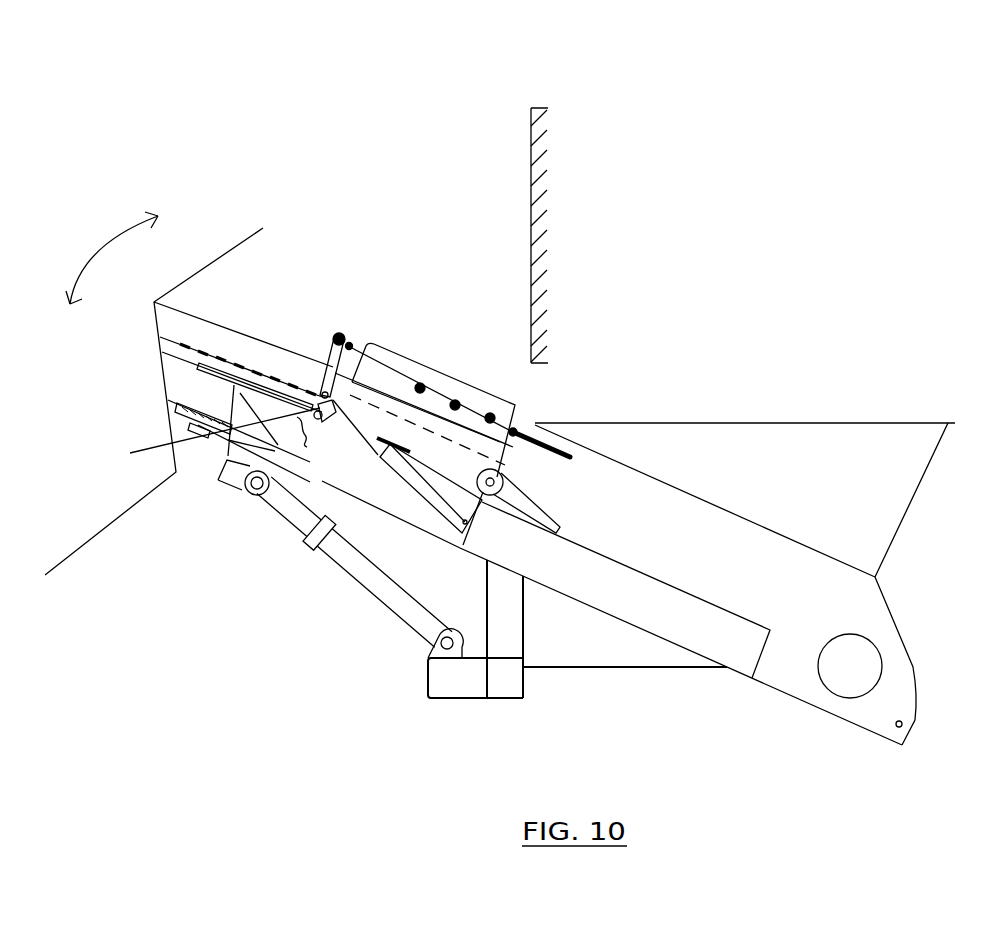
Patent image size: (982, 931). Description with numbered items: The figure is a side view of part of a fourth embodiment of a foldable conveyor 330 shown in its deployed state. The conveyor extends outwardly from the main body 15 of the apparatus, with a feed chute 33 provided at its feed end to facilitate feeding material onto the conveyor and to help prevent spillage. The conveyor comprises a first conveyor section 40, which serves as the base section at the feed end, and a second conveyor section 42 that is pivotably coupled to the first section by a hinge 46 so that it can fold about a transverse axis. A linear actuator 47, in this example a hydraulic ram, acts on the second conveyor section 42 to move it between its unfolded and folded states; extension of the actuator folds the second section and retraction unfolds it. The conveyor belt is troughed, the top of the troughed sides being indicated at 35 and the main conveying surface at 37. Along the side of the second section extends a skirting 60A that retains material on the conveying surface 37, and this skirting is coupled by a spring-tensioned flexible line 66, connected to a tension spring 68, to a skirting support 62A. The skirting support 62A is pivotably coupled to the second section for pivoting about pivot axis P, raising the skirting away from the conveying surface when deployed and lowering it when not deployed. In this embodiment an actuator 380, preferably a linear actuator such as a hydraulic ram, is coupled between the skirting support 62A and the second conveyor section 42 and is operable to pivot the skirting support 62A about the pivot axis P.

The main body 15 is at (531, 135).
The feed chute 33 is at (885, 527).
The top of the troughed sides 35 is at (258, 333).
The main conveying surface 37 is at (180, 333).
The first conveyor section 40 is at (880, 617).
The second conveyor section 42 is at (420, 518).
The hinge 46 is at (500, 490).
The linear actuator 47 is at (403, 610).
The skirting 60A is at (482, 400).
The skirting support 62A is at (330, 350).
The flexible line 66 is at (438, 393).
The spring 68 is at (560, 443).
The foldable conveyor 330 is at (176, 556).
The actuator 380 is at (318, 530).
The pivot axis P is at (212, 440).